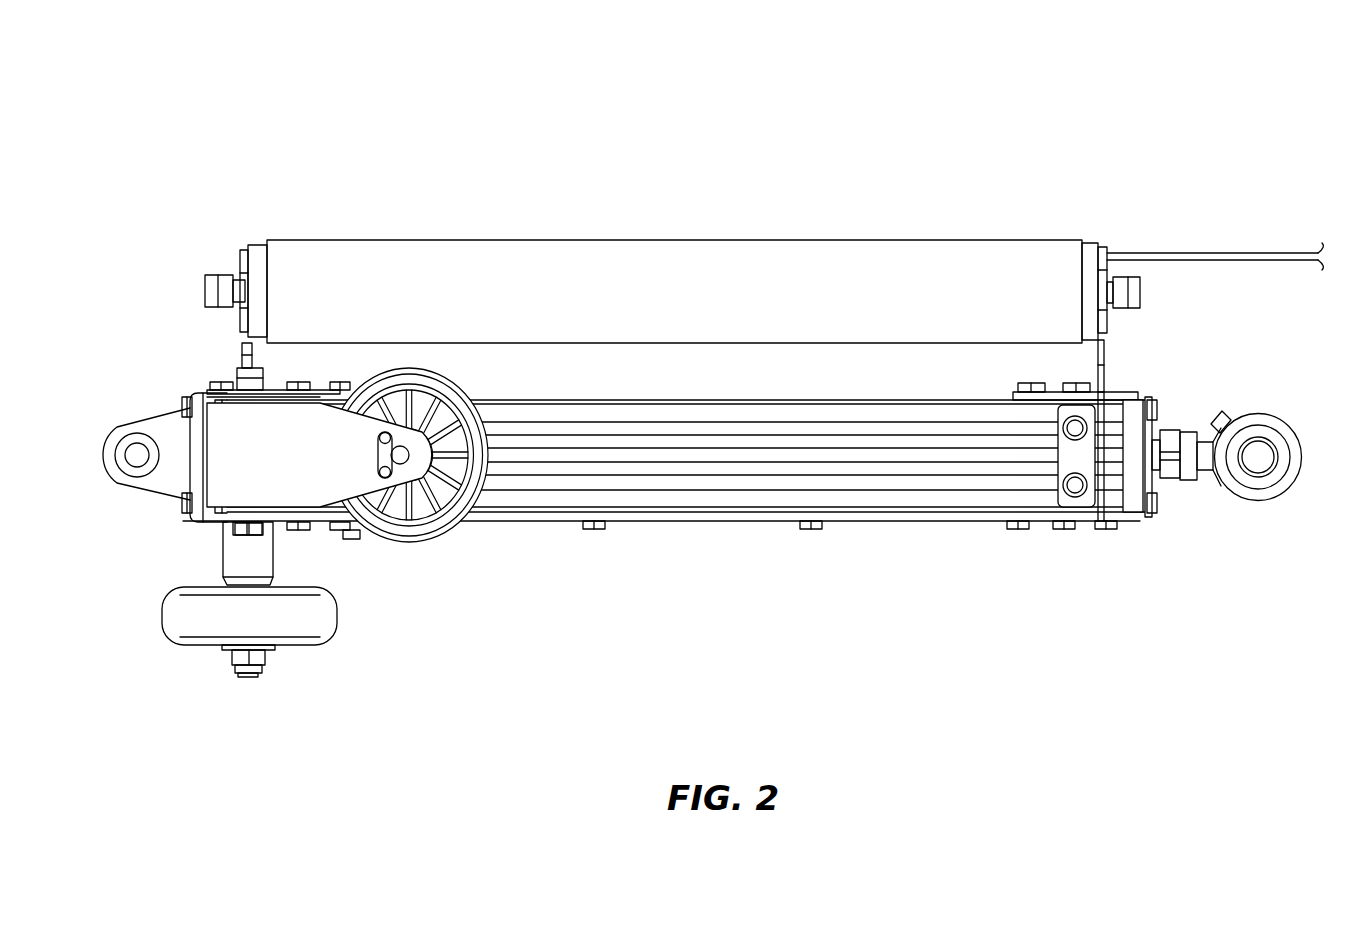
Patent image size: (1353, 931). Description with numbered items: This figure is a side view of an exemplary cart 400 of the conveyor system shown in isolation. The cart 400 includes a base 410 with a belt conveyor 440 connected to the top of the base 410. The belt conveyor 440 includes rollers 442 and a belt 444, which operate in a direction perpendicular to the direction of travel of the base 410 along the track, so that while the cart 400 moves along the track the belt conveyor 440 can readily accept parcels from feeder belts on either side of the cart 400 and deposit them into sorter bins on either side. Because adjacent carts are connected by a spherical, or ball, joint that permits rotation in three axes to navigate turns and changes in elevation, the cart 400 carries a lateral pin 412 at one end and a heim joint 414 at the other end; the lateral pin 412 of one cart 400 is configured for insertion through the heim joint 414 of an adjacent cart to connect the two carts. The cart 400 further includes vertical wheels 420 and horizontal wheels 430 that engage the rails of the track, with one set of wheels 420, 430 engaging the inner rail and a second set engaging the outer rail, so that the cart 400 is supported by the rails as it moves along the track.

The cart 400 is at (170, 139).
The base 410 is at (1127, 393).
The lateral pin 412 is at (128, 437).
The heim joint 414 is at (1277, 413).
The vertical wheels 420 is at (445, 382).
The horizontal wheels 430 is at (165, 618).
The belt conveyor 440 is at (313, 238).
The rollers 442 is at (233, 272).
The belt 444 is at (613, 238).